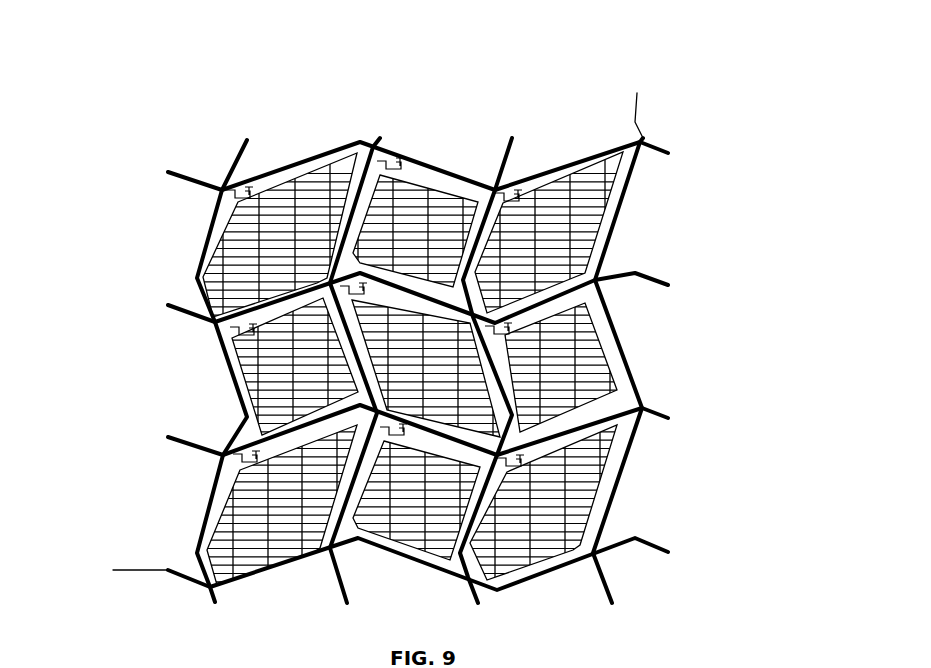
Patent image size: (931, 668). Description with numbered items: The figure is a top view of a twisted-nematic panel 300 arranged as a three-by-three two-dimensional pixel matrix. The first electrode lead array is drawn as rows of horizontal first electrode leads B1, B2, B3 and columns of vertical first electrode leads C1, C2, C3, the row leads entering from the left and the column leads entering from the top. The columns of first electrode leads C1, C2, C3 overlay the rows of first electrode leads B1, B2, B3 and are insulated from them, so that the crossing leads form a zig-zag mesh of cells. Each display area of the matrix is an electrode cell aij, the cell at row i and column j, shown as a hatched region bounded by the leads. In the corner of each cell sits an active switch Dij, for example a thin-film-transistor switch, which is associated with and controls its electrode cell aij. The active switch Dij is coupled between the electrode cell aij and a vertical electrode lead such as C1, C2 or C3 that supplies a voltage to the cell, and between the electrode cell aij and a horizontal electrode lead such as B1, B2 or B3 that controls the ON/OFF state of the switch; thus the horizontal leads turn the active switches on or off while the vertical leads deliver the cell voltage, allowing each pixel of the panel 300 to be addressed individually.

The pixel array 300 is at (160, 117).
The first electrode lead (horizontal electrode lead) B1 is at (168, 172).
The first electrode lead (horizontal electrode lead) B2 is at (168, 303).
The first electrode lead (horizontal electrode lead) B3 is at (168, 437).
The first electrode lead (vertical electrode lead) C1 is at (247, 140).
The first electrode lead (vertical electrode lead) C2 is at (380, 138).
The first electrode lead (vertical electrode lead) C3 is at (512, 138).
The active switch Dij is at (515, 193).
The electrode cell aij is at (583, 377).